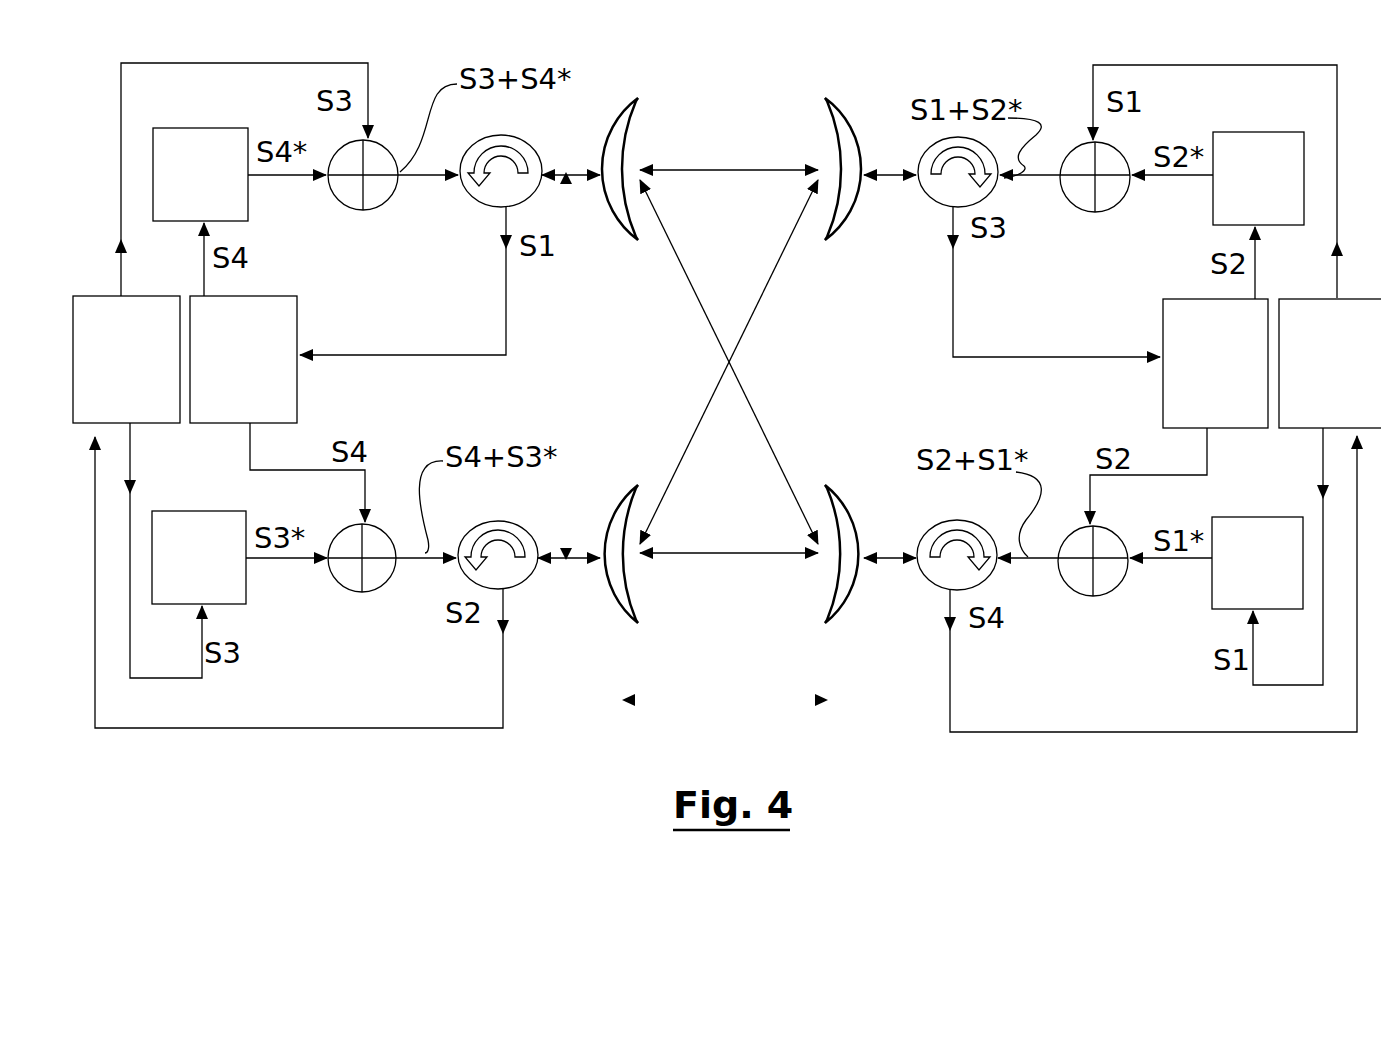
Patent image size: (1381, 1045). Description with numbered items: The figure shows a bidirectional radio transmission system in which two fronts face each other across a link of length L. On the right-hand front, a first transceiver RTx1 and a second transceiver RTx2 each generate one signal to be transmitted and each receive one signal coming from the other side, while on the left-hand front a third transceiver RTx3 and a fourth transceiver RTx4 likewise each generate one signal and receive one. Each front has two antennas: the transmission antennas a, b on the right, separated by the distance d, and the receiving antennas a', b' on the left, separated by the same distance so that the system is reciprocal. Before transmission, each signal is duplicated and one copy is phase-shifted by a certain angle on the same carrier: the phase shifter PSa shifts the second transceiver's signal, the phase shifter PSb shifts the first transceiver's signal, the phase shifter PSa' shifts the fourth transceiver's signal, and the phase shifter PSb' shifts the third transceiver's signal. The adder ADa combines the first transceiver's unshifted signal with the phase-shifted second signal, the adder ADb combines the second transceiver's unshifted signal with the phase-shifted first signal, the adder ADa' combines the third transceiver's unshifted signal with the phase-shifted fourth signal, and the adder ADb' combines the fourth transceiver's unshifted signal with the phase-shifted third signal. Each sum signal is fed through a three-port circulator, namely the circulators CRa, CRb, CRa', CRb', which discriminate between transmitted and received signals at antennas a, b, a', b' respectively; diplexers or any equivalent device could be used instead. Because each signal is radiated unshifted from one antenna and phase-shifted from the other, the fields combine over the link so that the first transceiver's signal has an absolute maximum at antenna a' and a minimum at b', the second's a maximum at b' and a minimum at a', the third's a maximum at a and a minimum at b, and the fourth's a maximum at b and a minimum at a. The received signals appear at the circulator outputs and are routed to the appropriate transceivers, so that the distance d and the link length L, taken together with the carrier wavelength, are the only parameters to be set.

The transmission antenna a is at (854, 162).
The receiving antenna a' is at (617, 160).
The transmission antenna b is at (854, 560).
The receiving antenna b' is at (605, 571).
The distance between the transmission antennas d is at (700, 361).
The link length L is at (725, 688).
The three-port circulator CRa is at (1011, 247).
The three-port circulator CRa' is at (450, 232).
The three-port circulator CRb is at (1107, 584).
The three-port circulator CRb' is at (347, 582).
The adder ADa is at (1163, 184).
The adder ADa' is at (295, 182).
The adder ADb is at (1102, 574).
The adder ADb' is at (353, 569).
The phase shifter PSa is at (1218, 215).
The phase shifter PSa' is at (239, 212).
The phase shifter PSb is at (1226, 556).
The phase shifter PSb' is at (228, 550).
The first transceiver RTx1 is at (1330, 363).
The second transceiver RTx2 is at (1215, 363).
The third transceiver RTx3 is at (126, 359).
The fourth transceiver RTx4 is at (243, 359).